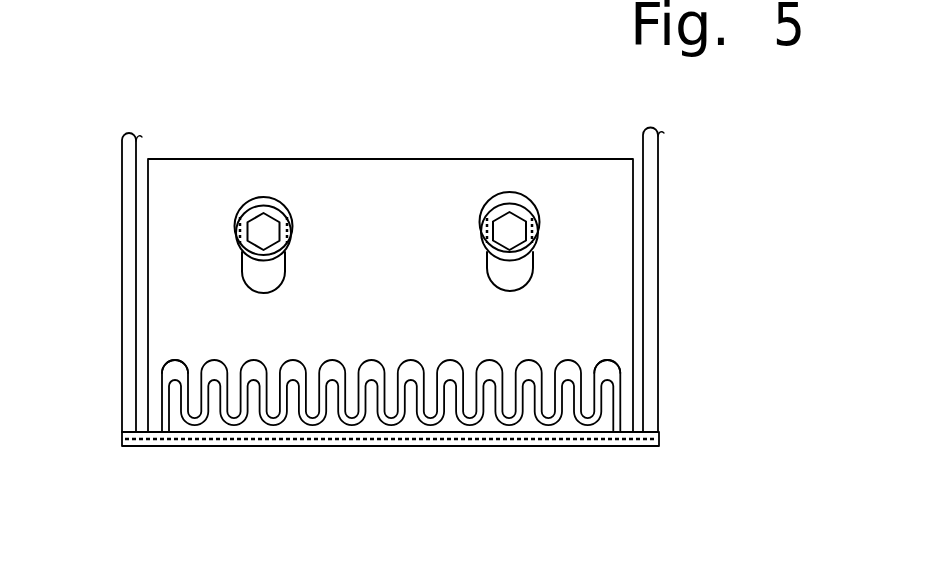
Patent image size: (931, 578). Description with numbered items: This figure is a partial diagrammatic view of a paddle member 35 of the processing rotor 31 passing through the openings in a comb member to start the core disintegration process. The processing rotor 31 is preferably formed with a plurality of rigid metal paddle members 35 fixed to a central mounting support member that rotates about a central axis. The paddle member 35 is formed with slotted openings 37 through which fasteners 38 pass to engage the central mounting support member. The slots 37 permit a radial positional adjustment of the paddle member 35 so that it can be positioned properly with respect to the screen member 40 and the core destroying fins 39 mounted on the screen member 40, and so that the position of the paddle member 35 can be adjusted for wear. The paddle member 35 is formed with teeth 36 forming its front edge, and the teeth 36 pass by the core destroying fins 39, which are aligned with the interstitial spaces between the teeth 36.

The processing rotor 31 is at (205, 108).
The paddle member 35 is at (633, 248).
The teeth 36 is at (588, 426).
The slotted openings 37 is at (508, 289).
The fasteners 38 is at (502, 213).
The core destroying fins 39 is at (377, 380).
The screen member 40 is at (640, 446).